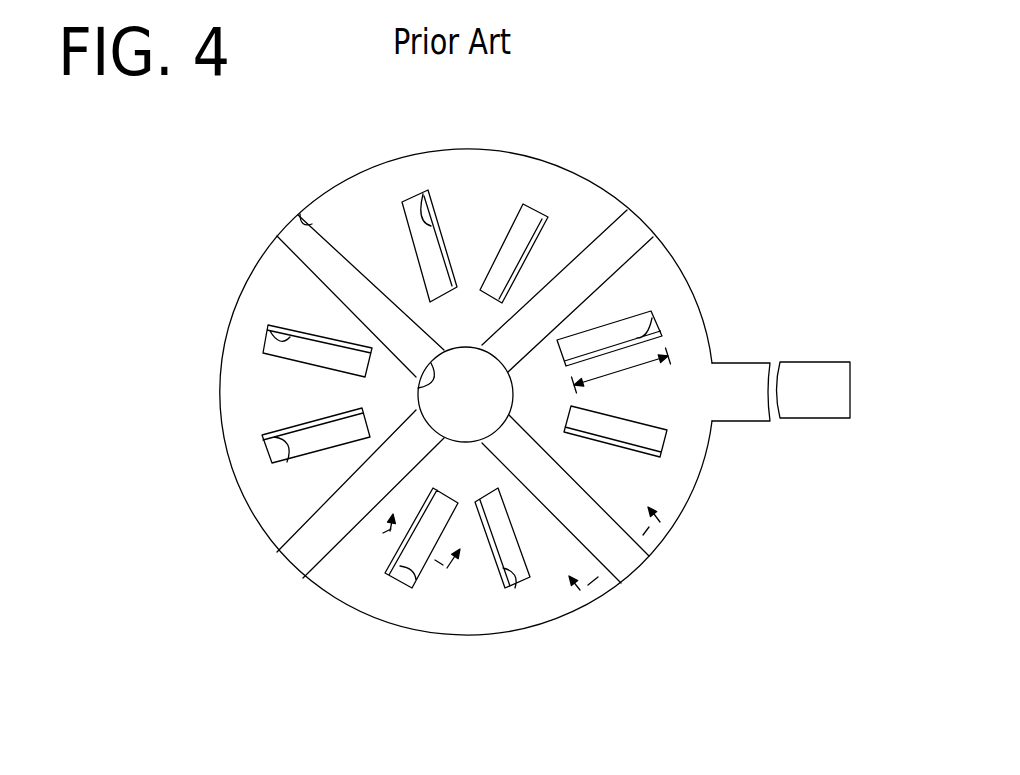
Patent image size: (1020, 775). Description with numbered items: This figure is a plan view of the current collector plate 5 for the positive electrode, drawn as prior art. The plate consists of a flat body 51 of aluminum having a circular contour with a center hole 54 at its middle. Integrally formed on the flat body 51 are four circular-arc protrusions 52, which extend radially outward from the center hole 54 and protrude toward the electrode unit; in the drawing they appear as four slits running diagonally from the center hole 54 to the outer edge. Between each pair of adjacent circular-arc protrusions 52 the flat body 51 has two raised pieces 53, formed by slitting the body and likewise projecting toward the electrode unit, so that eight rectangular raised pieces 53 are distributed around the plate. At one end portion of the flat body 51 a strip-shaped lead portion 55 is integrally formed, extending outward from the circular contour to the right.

The current collector plate 5 is at (547, 156).
The flat body 51 is at (375, 203).
The circular-arc protrusions 52 is at (303, 222).
The raised pieces 53 is at (425, 196).
The center hole 54 is at (420, 388).
The lead portion 55 is at (825, 380).